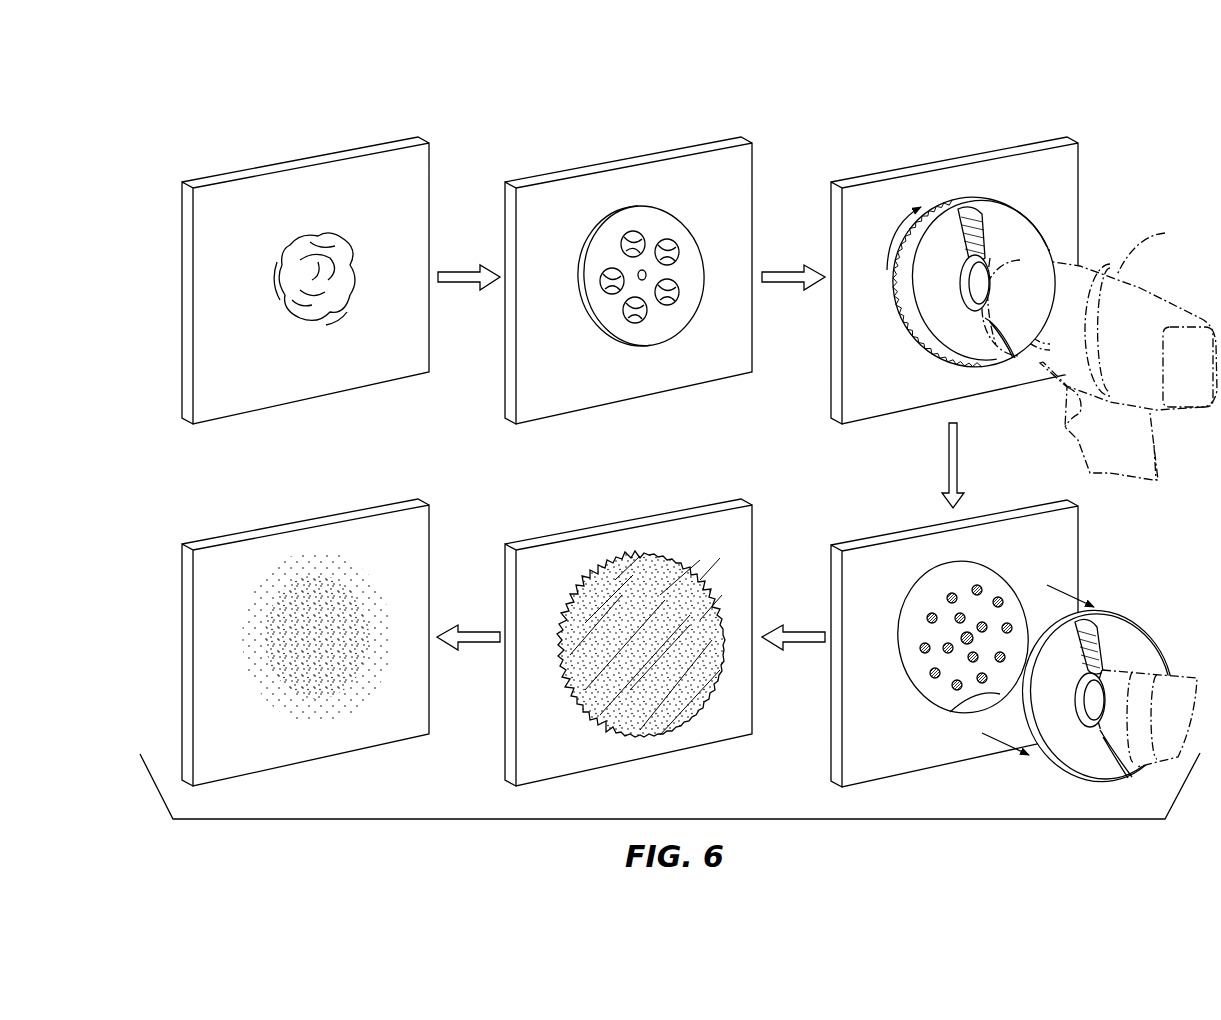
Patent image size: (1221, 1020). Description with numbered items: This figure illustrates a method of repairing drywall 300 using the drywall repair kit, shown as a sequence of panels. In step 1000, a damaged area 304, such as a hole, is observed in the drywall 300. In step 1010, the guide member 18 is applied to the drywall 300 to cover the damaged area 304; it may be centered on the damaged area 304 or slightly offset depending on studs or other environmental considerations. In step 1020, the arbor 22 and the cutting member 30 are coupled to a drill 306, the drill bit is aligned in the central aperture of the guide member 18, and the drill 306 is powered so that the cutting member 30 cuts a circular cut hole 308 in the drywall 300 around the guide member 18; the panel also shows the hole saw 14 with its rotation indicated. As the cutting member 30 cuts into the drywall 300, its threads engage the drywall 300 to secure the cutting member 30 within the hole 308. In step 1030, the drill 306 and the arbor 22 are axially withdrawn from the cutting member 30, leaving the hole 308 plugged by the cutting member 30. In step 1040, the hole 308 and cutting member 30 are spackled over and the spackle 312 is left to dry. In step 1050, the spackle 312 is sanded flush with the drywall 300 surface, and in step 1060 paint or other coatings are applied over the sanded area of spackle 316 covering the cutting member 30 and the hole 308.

The drywall 300 is at (207, 210).
The damaged area 304 is at (267, 304).
The guide member 18 is at (607, 313).
The hole saw 14 is at (1054, 226).
The drill 306 is at (1112, 349).
The cutting member 30 is at (993, 583).
The arbor 22 is at (1148, 611).
The cut hole 308 is at (958, 705).
The spackle 312 is at (711, 701).
The sanded area of spackle 316 is at (378, 701).
The step 1000 is at (243, 157).
The step 1010 is at (612, 147).
The step 1020 is at (946, 149).
The step 1030 is at (902, 505).
The step 1040 is at (646, 497).
The step 1050 is at (329, 617).
The step 1060 is at (371, 495).